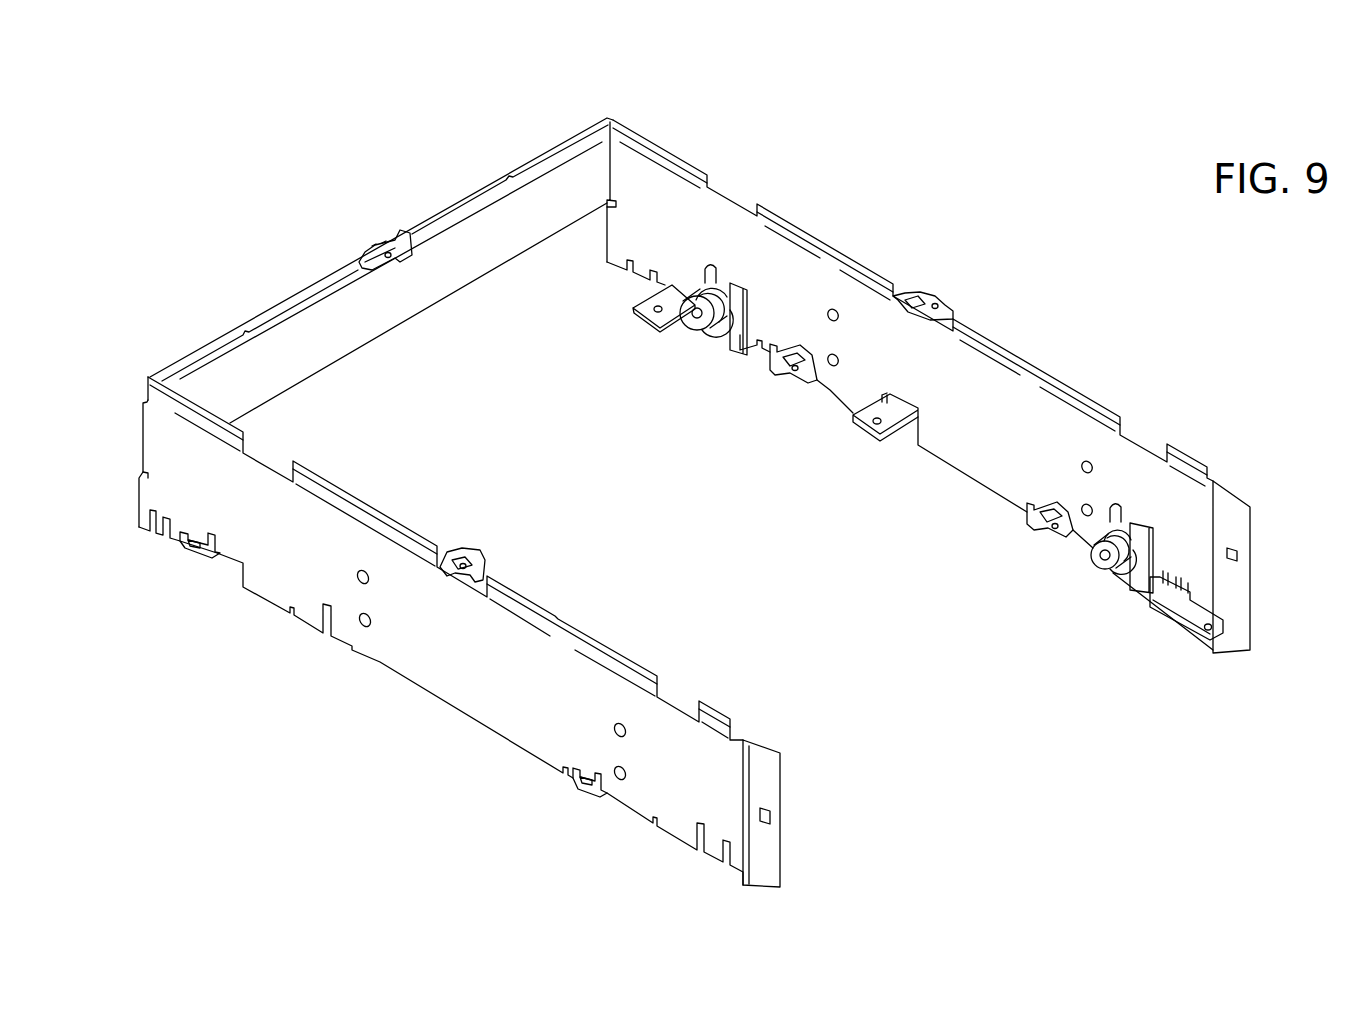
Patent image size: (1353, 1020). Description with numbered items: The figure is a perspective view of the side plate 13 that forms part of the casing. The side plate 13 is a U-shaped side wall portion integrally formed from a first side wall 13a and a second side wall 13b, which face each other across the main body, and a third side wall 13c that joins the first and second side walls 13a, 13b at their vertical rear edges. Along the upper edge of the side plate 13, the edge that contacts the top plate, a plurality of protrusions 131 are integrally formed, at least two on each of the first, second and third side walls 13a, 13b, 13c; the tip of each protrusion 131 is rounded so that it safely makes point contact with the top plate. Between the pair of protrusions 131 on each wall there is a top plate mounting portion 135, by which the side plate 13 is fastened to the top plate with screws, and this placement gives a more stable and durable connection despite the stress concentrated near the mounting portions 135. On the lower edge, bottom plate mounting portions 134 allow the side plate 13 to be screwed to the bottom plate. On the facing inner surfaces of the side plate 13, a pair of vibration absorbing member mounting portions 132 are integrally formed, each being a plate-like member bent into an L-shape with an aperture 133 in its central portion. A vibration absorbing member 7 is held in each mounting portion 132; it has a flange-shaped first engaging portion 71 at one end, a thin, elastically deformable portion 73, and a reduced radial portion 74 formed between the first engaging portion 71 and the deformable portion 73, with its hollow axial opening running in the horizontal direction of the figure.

The side plate 13 is at (1023, 210).
The first side wall 13a is at (482, 688).
The second side wall 13b is at (976, 439).
The third side wall 13c is at (410, 297).
The protrusions 131 is at (170, 383).
The vibration absorbing member mounting portions 132 is at (731, 337).
The aperture 133 is at (722, 275).
The bottom plate mounting portions 134 is at (193, 555).
The top plate mounting portions 135 is at (383, 245).
The vibration absorbing member 7 is at (690, 327).
The first engaging portion 71 is at (650, 307).
The deformable portion 73 is at (1137, 555).
The reduced radial portion 74 is at (717, 313).